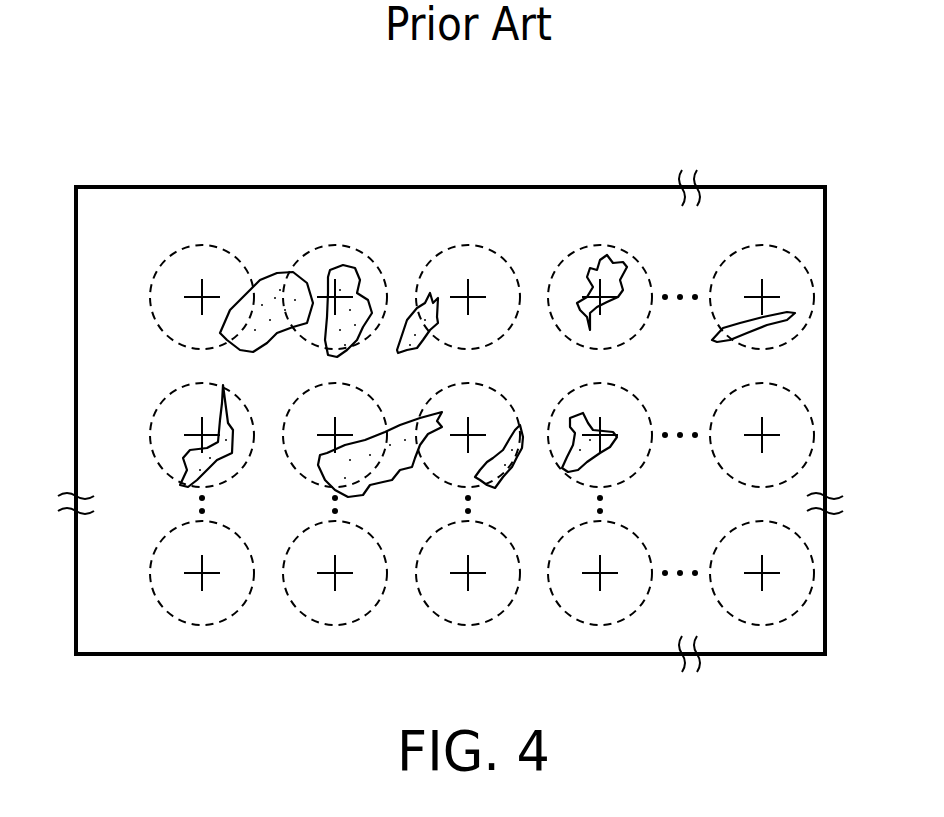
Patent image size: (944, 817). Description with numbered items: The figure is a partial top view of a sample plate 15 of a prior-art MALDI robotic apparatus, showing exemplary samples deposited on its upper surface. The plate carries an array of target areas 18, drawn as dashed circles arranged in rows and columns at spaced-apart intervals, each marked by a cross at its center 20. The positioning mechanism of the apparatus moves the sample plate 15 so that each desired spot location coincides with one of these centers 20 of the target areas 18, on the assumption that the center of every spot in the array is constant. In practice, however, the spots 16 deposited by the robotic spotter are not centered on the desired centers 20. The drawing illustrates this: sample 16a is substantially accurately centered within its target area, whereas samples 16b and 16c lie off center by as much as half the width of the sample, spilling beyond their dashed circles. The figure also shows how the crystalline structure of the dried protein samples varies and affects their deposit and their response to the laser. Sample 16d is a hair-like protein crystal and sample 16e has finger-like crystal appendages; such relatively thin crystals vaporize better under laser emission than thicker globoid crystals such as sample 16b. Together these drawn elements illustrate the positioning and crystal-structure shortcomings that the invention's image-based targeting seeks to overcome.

The sample plate 15 is at (250, 186).
The spots 16 is at (273, 290).
The sample 16a is at (608, 260).
The sample 16b is at (258, 352).
The sample 16c is at (397, 352).
The sample 16d is at (714, 344).
The sample 16e is at (405, 457).
The target areas 18 is at (161, 540).
The centers 20 is at (193, 571).